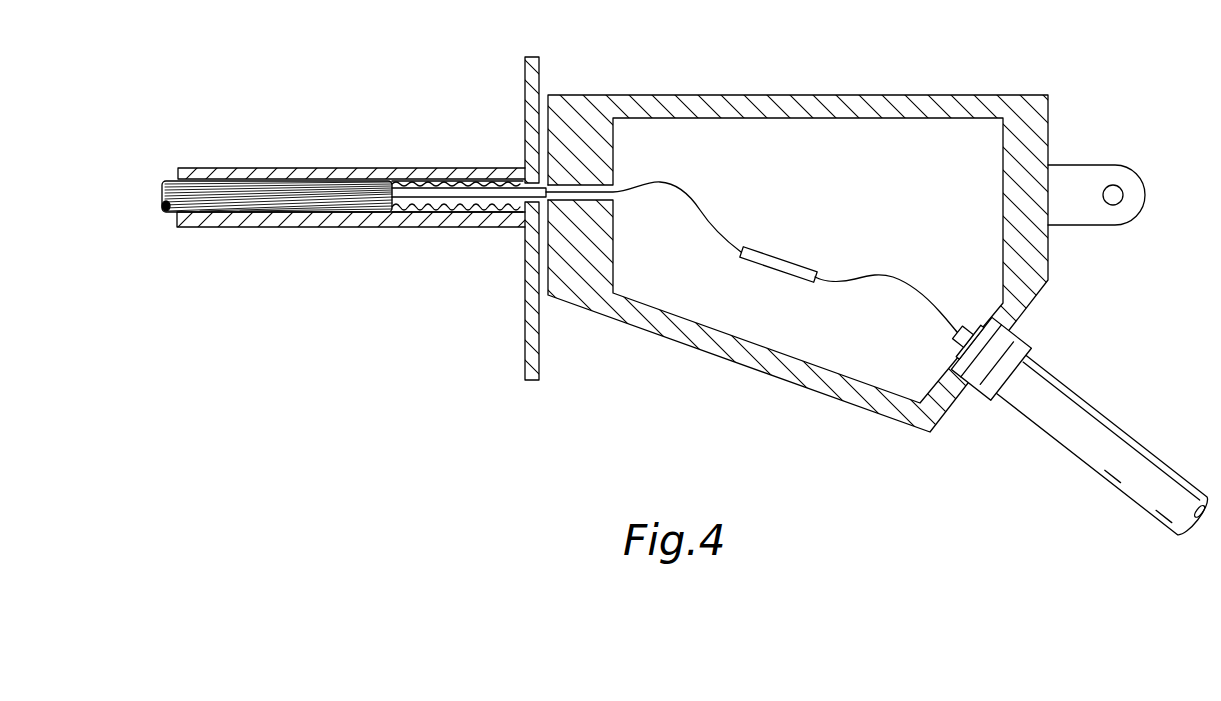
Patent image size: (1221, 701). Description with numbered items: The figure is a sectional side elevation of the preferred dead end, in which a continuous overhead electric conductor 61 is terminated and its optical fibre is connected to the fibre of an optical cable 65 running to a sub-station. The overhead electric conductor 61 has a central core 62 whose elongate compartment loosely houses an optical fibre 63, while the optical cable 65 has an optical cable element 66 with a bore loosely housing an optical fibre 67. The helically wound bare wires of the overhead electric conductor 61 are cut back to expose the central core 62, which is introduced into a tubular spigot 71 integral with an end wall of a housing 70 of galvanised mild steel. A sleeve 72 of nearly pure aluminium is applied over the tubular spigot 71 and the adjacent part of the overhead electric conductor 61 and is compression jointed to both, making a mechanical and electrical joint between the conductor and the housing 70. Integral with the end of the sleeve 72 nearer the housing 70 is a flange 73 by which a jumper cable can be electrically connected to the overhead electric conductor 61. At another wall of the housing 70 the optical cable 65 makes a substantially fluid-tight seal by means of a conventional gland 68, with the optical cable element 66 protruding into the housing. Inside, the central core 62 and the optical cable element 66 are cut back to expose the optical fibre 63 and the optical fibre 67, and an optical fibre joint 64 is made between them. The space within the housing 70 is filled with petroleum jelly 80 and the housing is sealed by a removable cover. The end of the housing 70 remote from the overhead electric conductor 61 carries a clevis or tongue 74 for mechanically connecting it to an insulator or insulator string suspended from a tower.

The overhead electric conductor 61 is at (167, 180).
The central core 62 is at (470, 198).
The optical fibre 63 is at (692, 197).
The optical fibre joint 64 is at (793, 265).
The optical cable 65 is at (1150, 470).
The optical cable element 66 is at (963, 330).
The optical fibre 67 is at (882, 278).
The gland 68 is at (1023, 338).
The housing 70 is at (770, 375).
The tubular spigot 71 is at (450, 180).
The sleeve 72 is at (315, 166).
The flange 73 is at (527, 369).
The clevis or tongue 74 is at (1110, 175).
The petroleum jelly 80 is at (921, 130).